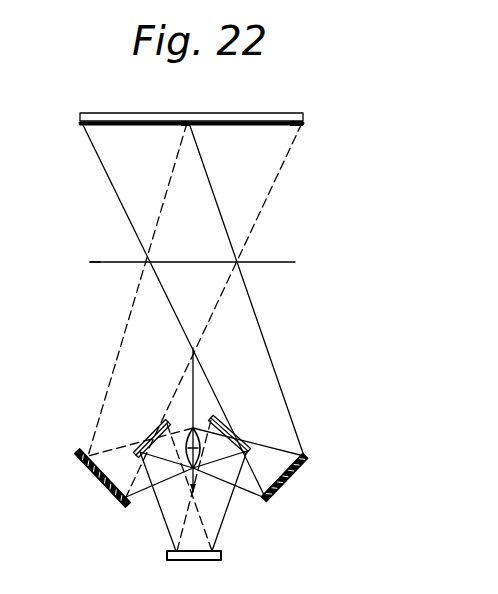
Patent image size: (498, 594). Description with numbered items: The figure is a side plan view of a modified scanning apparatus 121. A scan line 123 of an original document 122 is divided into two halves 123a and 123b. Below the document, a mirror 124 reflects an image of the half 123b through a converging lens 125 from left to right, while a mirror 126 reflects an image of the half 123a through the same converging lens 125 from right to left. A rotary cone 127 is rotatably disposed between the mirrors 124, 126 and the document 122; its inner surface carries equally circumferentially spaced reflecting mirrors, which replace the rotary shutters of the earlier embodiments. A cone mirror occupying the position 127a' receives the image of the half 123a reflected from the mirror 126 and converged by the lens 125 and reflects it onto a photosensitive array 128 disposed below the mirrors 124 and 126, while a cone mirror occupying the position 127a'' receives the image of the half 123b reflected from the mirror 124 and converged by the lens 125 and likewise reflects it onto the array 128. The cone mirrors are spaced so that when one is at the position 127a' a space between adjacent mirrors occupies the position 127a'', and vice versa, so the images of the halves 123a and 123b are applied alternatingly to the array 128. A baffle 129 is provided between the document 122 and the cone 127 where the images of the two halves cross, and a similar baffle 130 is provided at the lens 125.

The modified apparatus 121 is at (100, 314).
The original document 122 is at (283, 117).
The scan line 123 is at (150, 176).
The half of scan line 123a is at (127, 124).
The half of scan line 123b is at (242, 124).
The mirror 124 is at (80, 467).
The converging lens 125 is at (186, 452).
The mirror 126 is at (299, 468).
The rotary cone 127 is at (203, 416).
The mirror position 127a' is at (140, 416).
The mirror position 127a'' is at (256, 414).
The photosensitive array 128 is at (222, 557).
The baffle 129 is at (287, 262).
The baffle 130 is at (197, 373).